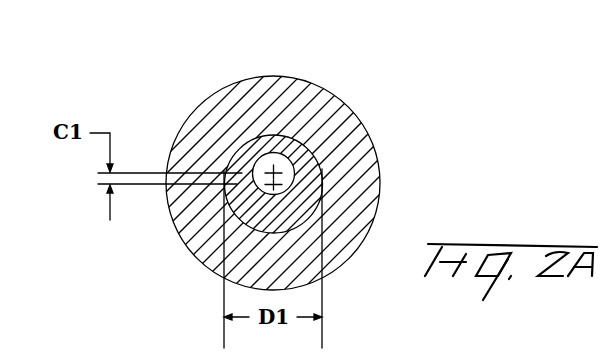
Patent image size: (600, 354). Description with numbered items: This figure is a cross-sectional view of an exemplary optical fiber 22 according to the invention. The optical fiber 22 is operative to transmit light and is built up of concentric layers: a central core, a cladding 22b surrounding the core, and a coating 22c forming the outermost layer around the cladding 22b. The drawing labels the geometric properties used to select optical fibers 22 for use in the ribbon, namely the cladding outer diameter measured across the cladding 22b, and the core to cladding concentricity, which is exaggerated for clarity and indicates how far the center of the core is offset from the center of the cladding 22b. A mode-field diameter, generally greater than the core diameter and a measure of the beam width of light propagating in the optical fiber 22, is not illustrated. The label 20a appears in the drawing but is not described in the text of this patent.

The optical fiber 22 is at (300, 180).
The optical fiber core 20a is at (303, 153).
The cladding 22b is at (321, 178).
The coating 22c is at (377, 213).